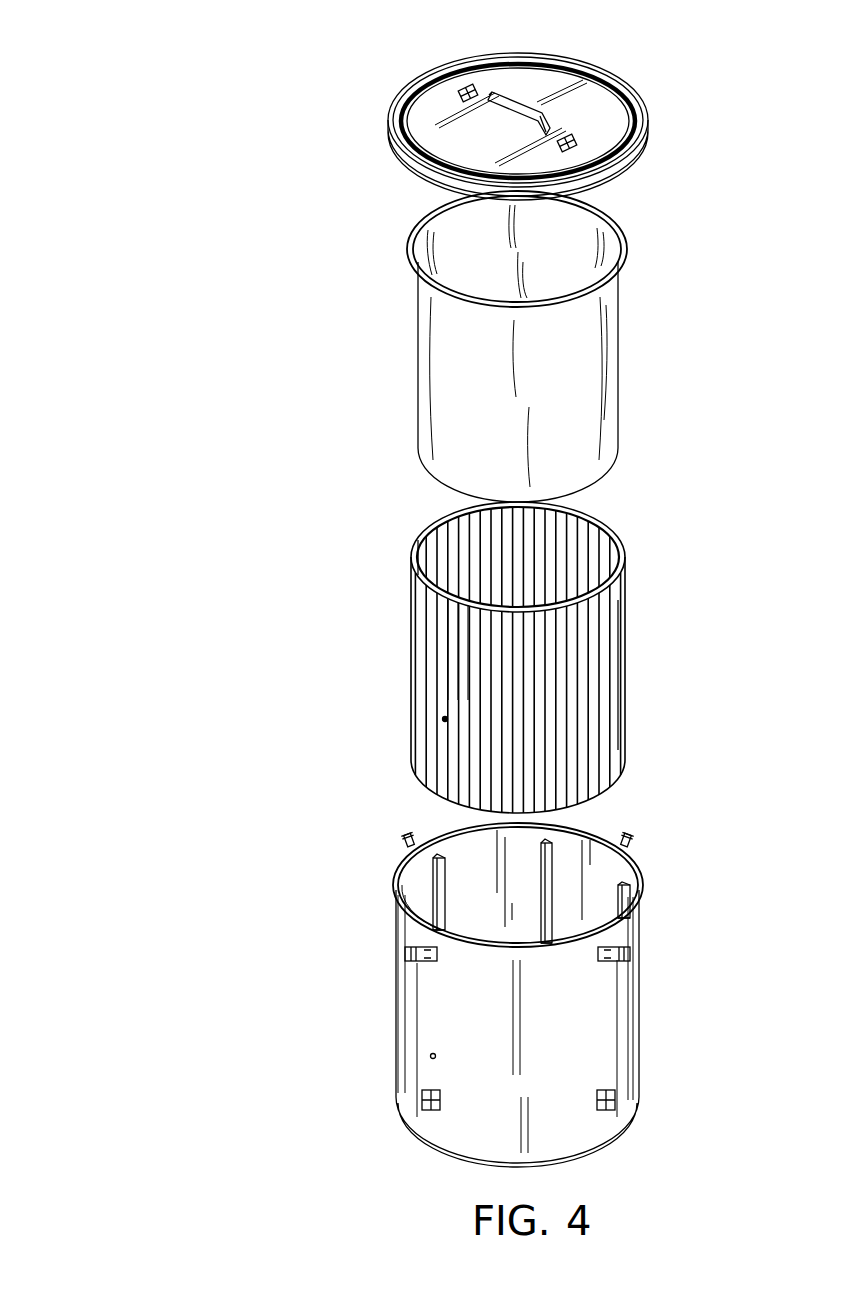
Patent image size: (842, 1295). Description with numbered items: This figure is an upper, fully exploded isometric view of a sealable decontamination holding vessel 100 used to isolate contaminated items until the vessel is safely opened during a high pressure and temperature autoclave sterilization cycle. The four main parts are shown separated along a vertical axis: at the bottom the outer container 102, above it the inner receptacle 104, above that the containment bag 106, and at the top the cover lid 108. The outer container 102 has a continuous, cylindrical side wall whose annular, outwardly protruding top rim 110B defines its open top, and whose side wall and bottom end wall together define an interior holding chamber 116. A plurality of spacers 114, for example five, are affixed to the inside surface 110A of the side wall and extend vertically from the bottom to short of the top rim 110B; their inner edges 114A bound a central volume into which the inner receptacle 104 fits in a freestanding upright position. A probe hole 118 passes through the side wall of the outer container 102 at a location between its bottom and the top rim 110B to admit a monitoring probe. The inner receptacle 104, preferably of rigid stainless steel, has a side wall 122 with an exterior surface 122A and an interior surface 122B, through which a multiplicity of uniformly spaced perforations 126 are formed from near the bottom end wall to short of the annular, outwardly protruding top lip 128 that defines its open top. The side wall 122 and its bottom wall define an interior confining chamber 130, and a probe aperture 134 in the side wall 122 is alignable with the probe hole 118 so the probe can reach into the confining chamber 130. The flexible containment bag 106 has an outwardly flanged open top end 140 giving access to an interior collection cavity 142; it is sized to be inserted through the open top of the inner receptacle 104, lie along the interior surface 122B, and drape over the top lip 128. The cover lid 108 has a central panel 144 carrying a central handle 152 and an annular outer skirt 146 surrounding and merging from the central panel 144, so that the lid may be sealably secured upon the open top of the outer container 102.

The sealable decontamination holding vessel 100 is at (273, 147).
The outer container 102 is at (516, 955).
The inner receptacle 104 is at (513, 642).
The containment bag 106 is at (543, 340).
The cover lid 108 is at (565, 106).
The inside surface of the side wall 110A is at (420, 893).
The top rim 110B is at (600, 838).
The spacers 114 is at (410, 866).
The inner edges 114A is at (620, 897).
The interior holding chamber 116 is at (468, 866).
The probe hole 118 is at (432, 1056).
The side wall 122 is at (592, 749).
The exterior surface 122A is at (609, 676).
The interior surface 122B is at (440, 570).
The perforations 126 is at (470, 663).
The top lip 128 is at (621, 549).
The interior confining chamber 130 is at (456, 552).
The probe aperture 134 is at (445, 719).
The outwardly-flanged open top end 140 is at (623, 230).
The interior collection cavity 142 is at (467, 262).
The central panel 144 is at (612, 126).
The annular outer skirt 146 is at (637, 157).
The central handle 152 is at (527, 100).